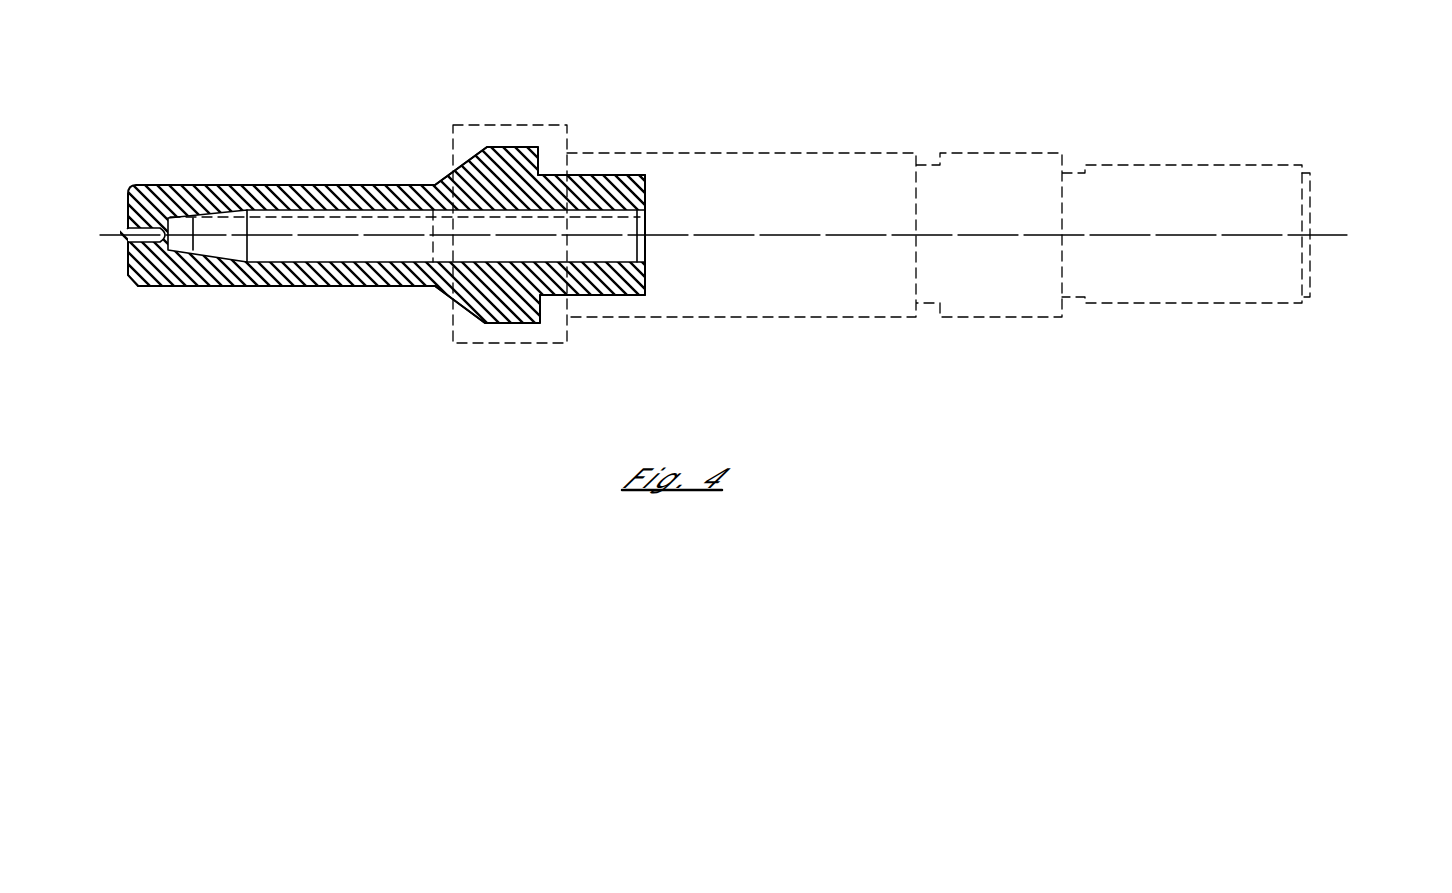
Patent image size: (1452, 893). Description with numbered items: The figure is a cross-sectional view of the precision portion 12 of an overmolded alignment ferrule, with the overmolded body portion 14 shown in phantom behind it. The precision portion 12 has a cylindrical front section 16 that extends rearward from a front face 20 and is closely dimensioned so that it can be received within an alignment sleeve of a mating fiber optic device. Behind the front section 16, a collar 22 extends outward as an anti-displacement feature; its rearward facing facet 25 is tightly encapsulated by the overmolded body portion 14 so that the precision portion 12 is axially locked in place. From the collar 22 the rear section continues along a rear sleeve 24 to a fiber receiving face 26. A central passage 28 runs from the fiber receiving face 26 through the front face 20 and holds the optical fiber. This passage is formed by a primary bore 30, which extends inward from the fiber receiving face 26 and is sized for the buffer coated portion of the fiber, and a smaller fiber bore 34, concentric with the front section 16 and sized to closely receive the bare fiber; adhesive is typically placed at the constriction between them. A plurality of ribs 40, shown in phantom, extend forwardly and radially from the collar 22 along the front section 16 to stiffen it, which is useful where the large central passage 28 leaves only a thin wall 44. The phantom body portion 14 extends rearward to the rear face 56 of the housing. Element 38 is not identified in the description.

The precision portion 12 is at (365, 185).
The overmolded body portion 14 is at (805, 152).
The front section 16 is at (215, 287).
The front face 20 is at (125, 262).
The collar 22 is at (518, 323).
The rear sleeve 24 is at (595, 297).
The rearward facing facet 25 is at (540, 318).
The fiber receiving face 26 is at (647, 290).
The central passage 28 is at (637, 213).
The primary bore 30 is at (565, 208).
The fiber bore 34 is at (130, 242).
The wire/needle 38 is at (228, 218).
The ribs 40 is at (470, 178).
The thin wall 44 is at (340, 287).
The rear face 56 is at (1312, 265).